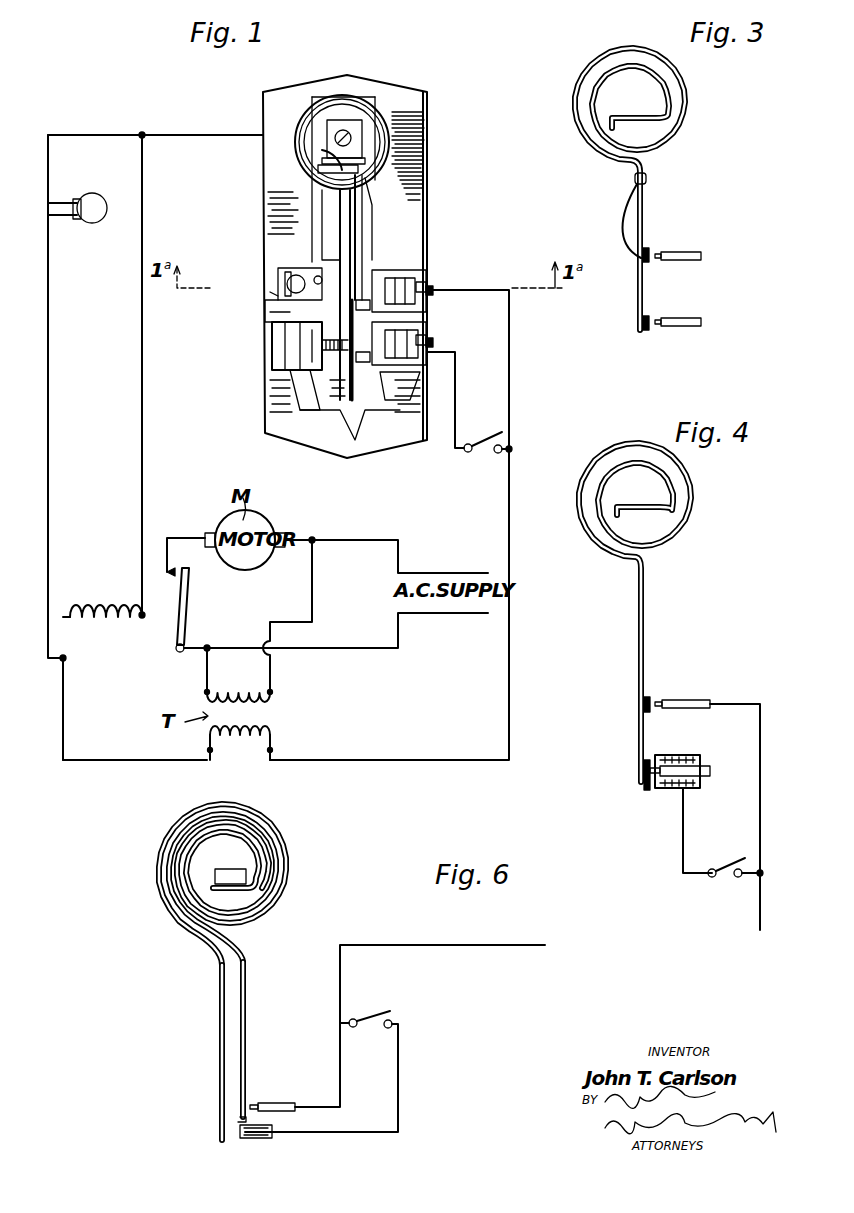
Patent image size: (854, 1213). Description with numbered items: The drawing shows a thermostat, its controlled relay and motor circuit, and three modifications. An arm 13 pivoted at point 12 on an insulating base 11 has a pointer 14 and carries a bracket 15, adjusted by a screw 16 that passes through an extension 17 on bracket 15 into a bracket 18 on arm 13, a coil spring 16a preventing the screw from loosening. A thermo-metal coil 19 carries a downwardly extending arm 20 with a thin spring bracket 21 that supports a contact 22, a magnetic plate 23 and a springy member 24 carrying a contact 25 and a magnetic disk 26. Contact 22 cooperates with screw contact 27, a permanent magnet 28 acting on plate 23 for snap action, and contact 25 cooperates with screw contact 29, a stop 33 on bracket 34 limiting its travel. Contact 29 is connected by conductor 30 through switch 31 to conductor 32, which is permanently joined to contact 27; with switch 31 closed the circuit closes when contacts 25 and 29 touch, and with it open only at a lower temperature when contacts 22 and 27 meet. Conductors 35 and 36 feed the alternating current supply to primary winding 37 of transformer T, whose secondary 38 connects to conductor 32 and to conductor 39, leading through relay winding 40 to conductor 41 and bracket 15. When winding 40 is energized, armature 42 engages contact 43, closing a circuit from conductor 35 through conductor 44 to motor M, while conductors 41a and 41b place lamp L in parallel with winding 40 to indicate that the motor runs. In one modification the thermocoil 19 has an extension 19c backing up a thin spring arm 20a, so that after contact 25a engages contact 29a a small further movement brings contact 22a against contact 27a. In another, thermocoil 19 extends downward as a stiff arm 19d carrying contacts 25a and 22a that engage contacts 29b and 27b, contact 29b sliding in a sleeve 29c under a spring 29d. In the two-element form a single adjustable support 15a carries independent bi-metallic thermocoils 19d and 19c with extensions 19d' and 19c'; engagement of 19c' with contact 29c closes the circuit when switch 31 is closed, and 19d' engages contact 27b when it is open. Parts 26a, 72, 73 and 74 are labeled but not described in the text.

In FIG. 1, the base 11 is at (300, 228).
In FIG. 1, the pivot point 12 is at (395, 123).
In FIG. 1, the arm 13 is at (268, 250).
In FIG. 1, the pointer 14 is at (350, 418).
In FIG. 1, the bracket 15 is at (348, 145).
In FIG. 6, the support 15a is at (232, 855).
In FIG. 1, the screw 16 is at (362, 180).
In FIG. 1, the coil spring 16a is at (318, 172).
In FIG. 1, the extension 17 is at (372, 205).
In FIG. 1, the bracket 18 is at (340, 195).
In FIG. 1, the temperature responsive device 19 is at (300, 152).
In FIG. 3, the temperature responsive device 19 is at (688, 104).
In FIG. 4, the temperature responsive device 19 is at (693, 505).
In FIG. 3, the thermocoil extension 19c is at (608, 215).
In FIG. 6, the thermocoil extension 19c is at (265, 888).
In FIG. 4, the arm 19d is at (606, 740).
In FIG. 6, the arm 19d is at (255, 884).
In FIG. 6, the extension 19c' is at (268, 1052).
In FIG. 6, the extension 19d' is at (276, 1031).
In FIG. 1, the arm 20 is at (280, 285).
In FIG. 3, the thin spring metal arm 20a is at (645, 235).
In FIG. 1, the bracket 21 is at (278, 301).
In FIG. 1, the contact 22 is at (380, 275).
In FIG. 3, the contact 22a is at (650, 264).
In FIG. 4, the contact 22a is at (650, 700).
In FIG. 1, the disk or plate 23 is at (367, 267).
In FIG. 1, the downwardly extending member 24 is at (432, 300).
In FIG. 1, the contact 25 is at (335, 398).
In FIG. 3, the contact 25a is at (650, 332).
In FIG. 4, the contact 25a is at (648, 786).
In FIG. 1, the disk 26 is at (290, 398).
In FIG. 1, the terminal 26a is at (432, 330).
In FIG. 1, the contact 27 is at (420, 278).
In FIG. 3, the contact 27a is at (700, 254).
In FIG. 4, the contact 27b is at (698, 700).
In FIG. 6, the contact 27b is at (272, 1102).
In FIG. 1, the permanent magnet 28 is at (425, 290).
In FIG. 1, the contact 29 is at (372, 378).
In FIG. 3, the contact 29a is at (700, 322).
In FIG. 4, the contact 29b is at (660, 762).
In FIG. 4, the sleeve 29c is at (706, 765).
In FIG. 6, the sleeve 29c is at (250, 1138).
In FIG. 4, the spring 29d is at (687, 790).
In FIG. 1, the conductor 30 is at (458, 393).
In FIG. 4, the conductor 30 is at (680, 848).
In FIG. 1, the switch 31 is at (498, 430).
In FIG. 4, the switch 31 is at (727, 880).
In FIG. 6, the switch 31 is at (368, 1008).
In FIG. 1, the conductor 32 is at (497, 284).
In FIG. 4, the conductor 32 is at (758, 922).
In FIG. 1, the stop 33 is at (300, 380).
In FIG. 1, the bracket 34 is at (272, 340).
In FIG. 1, the conductor 35 is at (335, 640).
In FIG. 1, the conductor 36 is at (312, 537).
In FIG. 1, the primary winding 37 is at (272, 700).
In FIG. 1, the secondary winding 38 is at (272, 733).
In FIG. 1, the conductor 39 is at (125, 744).
In FIG. 1, the relay winding 40 is at (108, 627).
In FIG. 1, the conductor 41 is at (197, 133).
In FIG. 1, the conductor 41a is at (98, 378).
In FIG. 1, the conductor 41b is at (84, 133).
In FIG. 1, the armature 42 is at (189, 600).
In FIG. 1, the contact 43 is at (169, 580).
In FIG. 1, the conductor 44 is at (180, 535).
In FIG. 1, the plate 72 is at (270, 312).
In FIG. 1, the screw 73 is at (278, 296).
In FIG. 1, the pin 74 is at (319, 284).